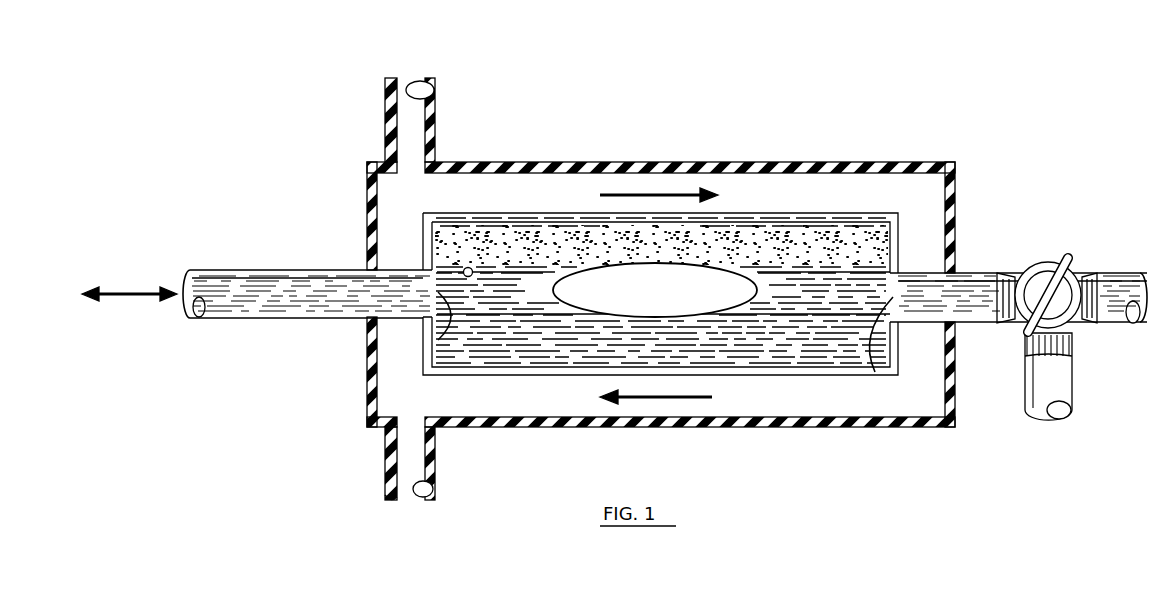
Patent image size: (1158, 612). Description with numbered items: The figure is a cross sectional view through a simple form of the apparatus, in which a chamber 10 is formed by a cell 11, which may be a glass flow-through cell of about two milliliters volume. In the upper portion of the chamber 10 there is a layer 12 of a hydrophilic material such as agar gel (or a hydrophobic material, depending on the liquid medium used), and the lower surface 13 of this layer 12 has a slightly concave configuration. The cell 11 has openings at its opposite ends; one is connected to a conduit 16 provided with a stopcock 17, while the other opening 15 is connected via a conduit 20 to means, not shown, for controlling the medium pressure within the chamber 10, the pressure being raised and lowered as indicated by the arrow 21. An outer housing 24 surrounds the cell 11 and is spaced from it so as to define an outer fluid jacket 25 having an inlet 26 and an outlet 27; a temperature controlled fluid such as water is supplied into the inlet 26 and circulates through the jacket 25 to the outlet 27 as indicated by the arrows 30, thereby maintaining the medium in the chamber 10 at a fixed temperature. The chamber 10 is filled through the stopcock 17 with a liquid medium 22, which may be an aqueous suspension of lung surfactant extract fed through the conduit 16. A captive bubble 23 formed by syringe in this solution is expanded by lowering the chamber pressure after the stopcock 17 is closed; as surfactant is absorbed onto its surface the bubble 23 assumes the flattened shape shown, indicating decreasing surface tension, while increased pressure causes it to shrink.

The chamber 10 is at (661, 317).
The cell 11 is at (800, 214).
The layer of hydrophilic material 12 is at (565, 242).
The lower surface of the layer 13 is at (470, 268).
The opening 15 is at (432, 337).
The conduit 16 is at (972, 272).
The stopcock 17 is at (1042, 278).
The conduit 20 is at (268, 317).
The arrow 21 is at (138, 291).
The liquid medium 22 is at (750, 340).
The captive bubble 23 is at (585, 317).
The outer housing 24 is at (713, 421).
The outer fluid jacket 25 is at (876, 423).
The inlet 26 is at (403, 80).
The outlet 27 is at (420, 500).
The arrows 30 is at (673, 193).